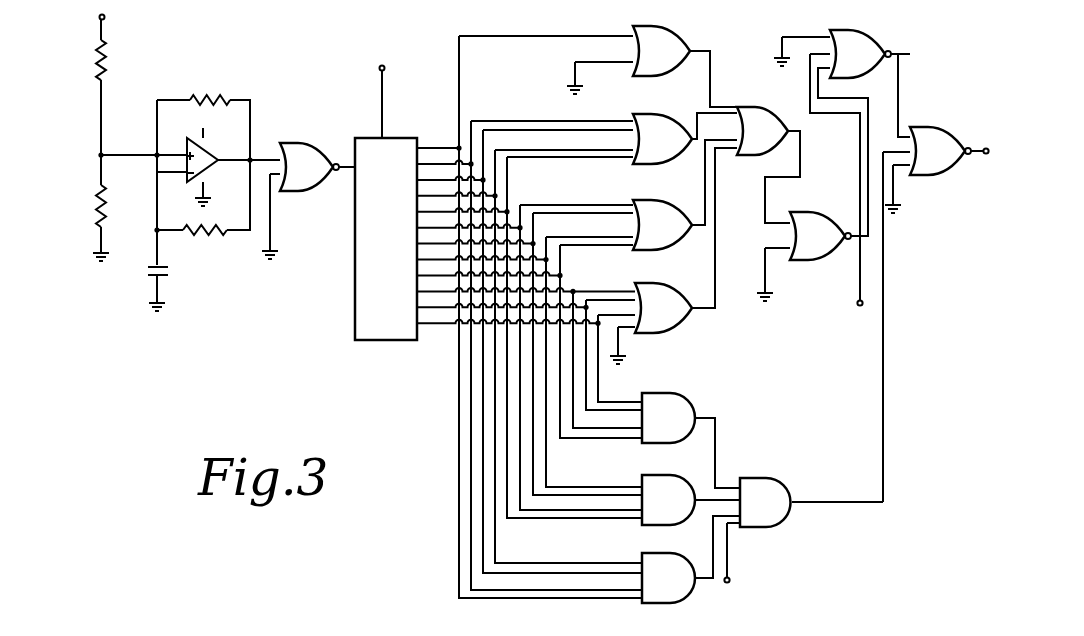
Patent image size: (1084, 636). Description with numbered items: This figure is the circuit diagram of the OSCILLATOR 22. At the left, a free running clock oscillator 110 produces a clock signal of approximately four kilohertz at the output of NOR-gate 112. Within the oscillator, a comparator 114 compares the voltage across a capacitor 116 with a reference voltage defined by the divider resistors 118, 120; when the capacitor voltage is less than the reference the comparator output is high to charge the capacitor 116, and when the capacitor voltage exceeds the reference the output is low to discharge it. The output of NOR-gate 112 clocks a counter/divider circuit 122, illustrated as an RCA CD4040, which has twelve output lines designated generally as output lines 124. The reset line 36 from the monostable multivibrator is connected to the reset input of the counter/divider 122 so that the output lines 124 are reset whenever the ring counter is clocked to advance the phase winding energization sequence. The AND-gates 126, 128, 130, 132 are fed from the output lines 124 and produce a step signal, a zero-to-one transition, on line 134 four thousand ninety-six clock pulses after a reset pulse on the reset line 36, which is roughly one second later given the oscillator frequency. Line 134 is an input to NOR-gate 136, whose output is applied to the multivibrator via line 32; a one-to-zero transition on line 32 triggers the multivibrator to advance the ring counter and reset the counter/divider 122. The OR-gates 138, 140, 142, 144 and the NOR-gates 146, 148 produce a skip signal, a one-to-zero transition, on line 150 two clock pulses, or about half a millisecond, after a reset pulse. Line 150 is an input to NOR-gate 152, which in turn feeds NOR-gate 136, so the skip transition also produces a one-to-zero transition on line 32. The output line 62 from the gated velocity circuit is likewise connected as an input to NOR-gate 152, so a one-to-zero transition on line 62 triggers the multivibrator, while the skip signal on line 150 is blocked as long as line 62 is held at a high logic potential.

The OSCILLATOR 22 is at (394, 480).
The line 32 is at (981, 146).
The reset line 36 is at (380, 107).
The output line 62 is at (858, 288).
The free running clock oscillator 110 is at (208, 68).
The NOR-gate 112 is at (320, 143).
The comparator 114 is at (218, 156).
The capacitor 116 is at (170, 273).
The divider resistor 118 is at (108, 75).
The divider resistor 120 is at (93, 228).
The counter/divider circuit 122 is at (380, 342).
The output lines 124 is at (430, 128).
The AND-gate 126 is at (672, 405).
The AND-gate 128 is at (661, 518).
The AND-gate 130 is at (670, 593).
The AND-gate 132 is at (763, 517).
The line 134 is at (884, 333).
The NOR-gate 136 is at (943, 142).
The OR-gate 138 is at (665, 126).
The OR-gate 140 is at (676, 214).
The OR-gate 142 is at (662, 324).
The OR-gate 144 is at (763, 118).
The NOR-gate 146 is at (675, 47).
The NOR-gate 148 is at (817, 252).
The line 150 is at (865, 143).
The NOR-gate 152 is at (882, 38).